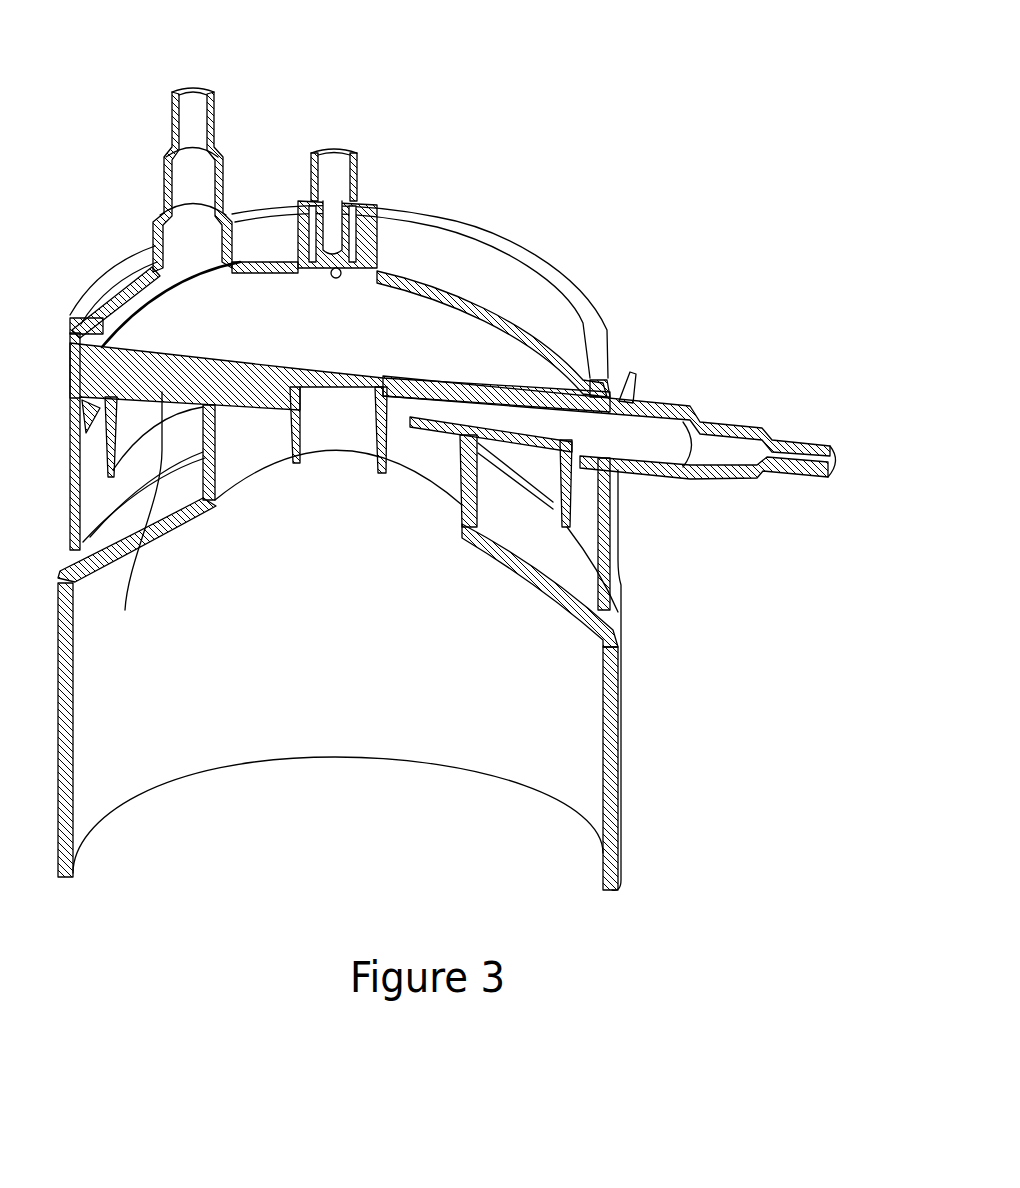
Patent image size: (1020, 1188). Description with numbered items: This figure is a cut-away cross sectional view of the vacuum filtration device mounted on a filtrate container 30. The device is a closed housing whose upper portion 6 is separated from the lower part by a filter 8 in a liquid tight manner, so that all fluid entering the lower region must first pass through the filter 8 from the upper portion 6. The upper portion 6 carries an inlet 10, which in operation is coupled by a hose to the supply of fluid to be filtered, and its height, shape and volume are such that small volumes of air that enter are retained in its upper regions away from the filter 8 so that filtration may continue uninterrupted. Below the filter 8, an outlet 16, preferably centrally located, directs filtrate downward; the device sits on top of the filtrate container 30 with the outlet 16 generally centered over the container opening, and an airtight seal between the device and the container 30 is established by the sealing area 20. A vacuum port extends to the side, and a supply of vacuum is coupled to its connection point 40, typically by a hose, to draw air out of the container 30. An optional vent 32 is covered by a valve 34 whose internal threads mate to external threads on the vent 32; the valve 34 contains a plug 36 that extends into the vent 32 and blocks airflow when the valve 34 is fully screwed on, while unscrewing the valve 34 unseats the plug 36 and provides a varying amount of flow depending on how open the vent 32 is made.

The upper portion 6 is at (583, 310).
The filter 8 is at (307, 340).
The inlet 10 is at (217, 133).
The outlet 16 is at (340, 427).
The sealing area 20 is at (520, 440).
The filtrate container 30 is at (610, 757).
The vent 32 is at (338, 280).
The valve 34 is at (360, 185).
The plug 36 is at (293, 233).
The connection point 40 is at (728, 423).